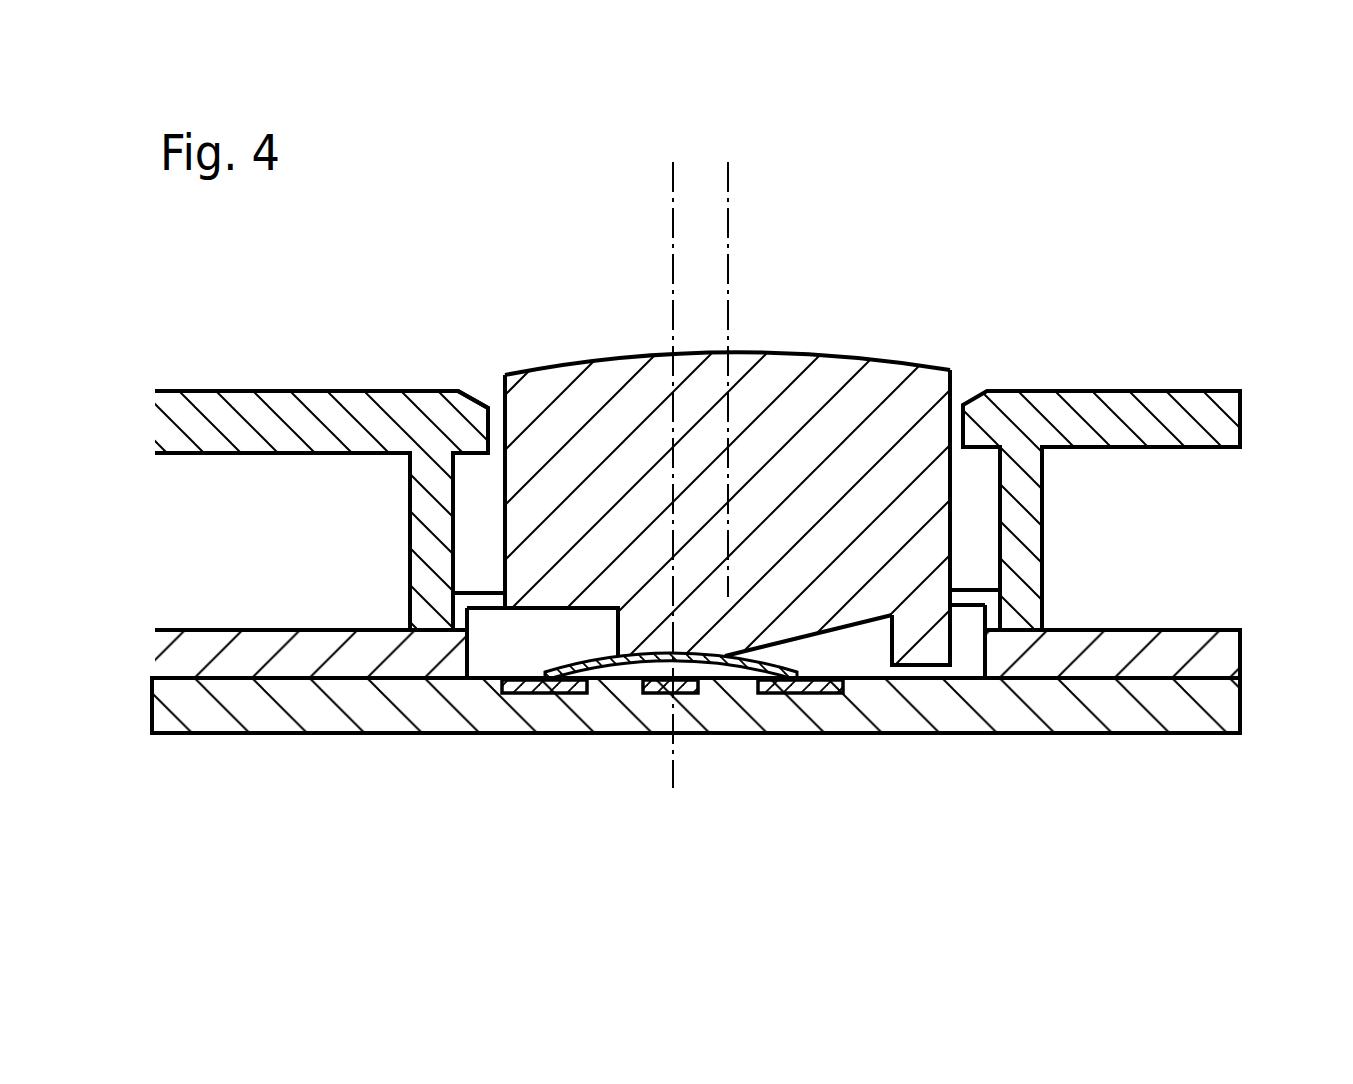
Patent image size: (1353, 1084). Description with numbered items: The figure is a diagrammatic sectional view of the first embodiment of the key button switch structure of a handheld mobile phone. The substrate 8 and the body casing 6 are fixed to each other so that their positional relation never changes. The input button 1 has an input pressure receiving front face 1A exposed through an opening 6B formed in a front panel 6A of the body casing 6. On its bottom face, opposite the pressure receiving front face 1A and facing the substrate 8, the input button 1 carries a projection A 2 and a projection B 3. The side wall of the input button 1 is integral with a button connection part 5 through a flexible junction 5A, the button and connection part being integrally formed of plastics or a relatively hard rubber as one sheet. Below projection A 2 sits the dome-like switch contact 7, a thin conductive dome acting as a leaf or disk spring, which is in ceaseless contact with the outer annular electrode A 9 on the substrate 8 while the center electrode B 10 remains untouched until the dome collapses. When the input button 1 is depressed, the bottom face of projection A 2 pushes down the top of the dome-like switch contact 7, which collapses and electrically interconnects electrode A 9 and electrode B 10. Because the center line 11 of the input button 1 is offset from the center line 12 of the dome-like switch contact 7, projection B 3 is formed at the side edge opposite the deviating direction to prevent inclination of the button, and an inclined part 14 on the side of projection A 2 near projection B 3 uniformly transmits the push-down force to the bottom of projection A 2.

The input button 1 is at (778, 367).
The input pressure receiving front face 1A is at (747, 350).
The projection A 2 is at (645, 608).
The projection B 3 is at (912, 676).
The button connection part 5 is at (1198, 573).
The flexible junction 5A is at (965, 605).
The body casing 6 is at (1118, 385).
The front panel 6A is at (420, 391).
The opening 6B is at (497, 405).
The dome-like switch contact 7 is at (558, 663).
The substrate 8 is at (257, 728).
The electrode A 9 is at (537, 690).
The electrode B 10 is at (655, 695).
The center line of the input button 11 is at (728, 168).
The center line of the dome-like switch contact 12 is at (673, 182).
The inclined part 14 is at (855, 612).